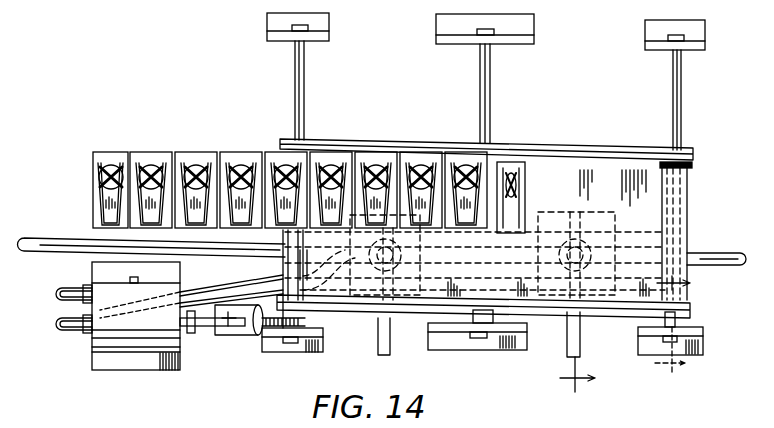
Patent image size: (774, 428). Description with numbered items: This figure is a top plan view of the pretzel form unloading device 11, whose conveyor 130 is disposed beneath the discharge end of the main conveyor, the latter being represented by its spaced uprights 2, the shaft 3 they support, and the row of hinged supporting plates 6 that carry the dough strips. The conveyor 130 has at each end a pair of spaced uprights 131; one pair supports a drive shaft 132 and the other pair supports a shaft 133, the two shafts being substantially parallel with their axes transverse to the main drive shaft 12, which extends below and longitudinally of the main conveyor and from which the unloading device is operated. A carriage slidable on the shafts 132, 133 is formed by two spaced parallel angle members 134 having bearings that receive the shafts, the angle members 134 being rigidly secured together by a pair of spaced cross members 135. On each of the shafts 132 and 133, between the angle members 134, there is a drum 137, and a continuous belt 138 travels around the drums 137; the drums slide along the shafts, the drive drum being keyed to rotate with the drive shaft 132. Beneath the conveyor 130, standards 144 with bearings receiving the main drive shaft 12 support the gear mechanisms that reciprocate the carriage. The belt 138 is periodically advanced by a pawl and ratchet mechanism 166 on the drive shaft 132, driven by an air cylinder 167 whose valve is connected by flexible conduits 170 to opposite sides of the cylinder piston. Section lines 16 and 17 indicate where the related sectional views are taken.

The uprights 2 is at (520, 44).
The shaft 3 is at (480, 80).
The supporting plates 6 is at (108, 160).
The pretzel form unloading device 11 is at (601, 123).
The main drive shaft 12 is at (60, 240).
The section line 16 is at (689, 326).
The section line 17 is at (577, 384).
The conveyor 130 is at (706, 196).
The uprights 131 is at (278, 40).
The drive shaft 132 is at (305, 100).
The shaft 133 is at (683, 122).
The angle members 134 is at (545, 148).
The cross members 135 is at (383, 356).
The drum 137 is at (662, 210).
The continuous belt 138 is at (620, 163).
The standards 144 is at (537, 214).
The pawl and ratchet mechanism 166 is at (246, 344).
The air cylinder 167 is at (115, 338).
The flexible conduits 170 is at (250, 290).